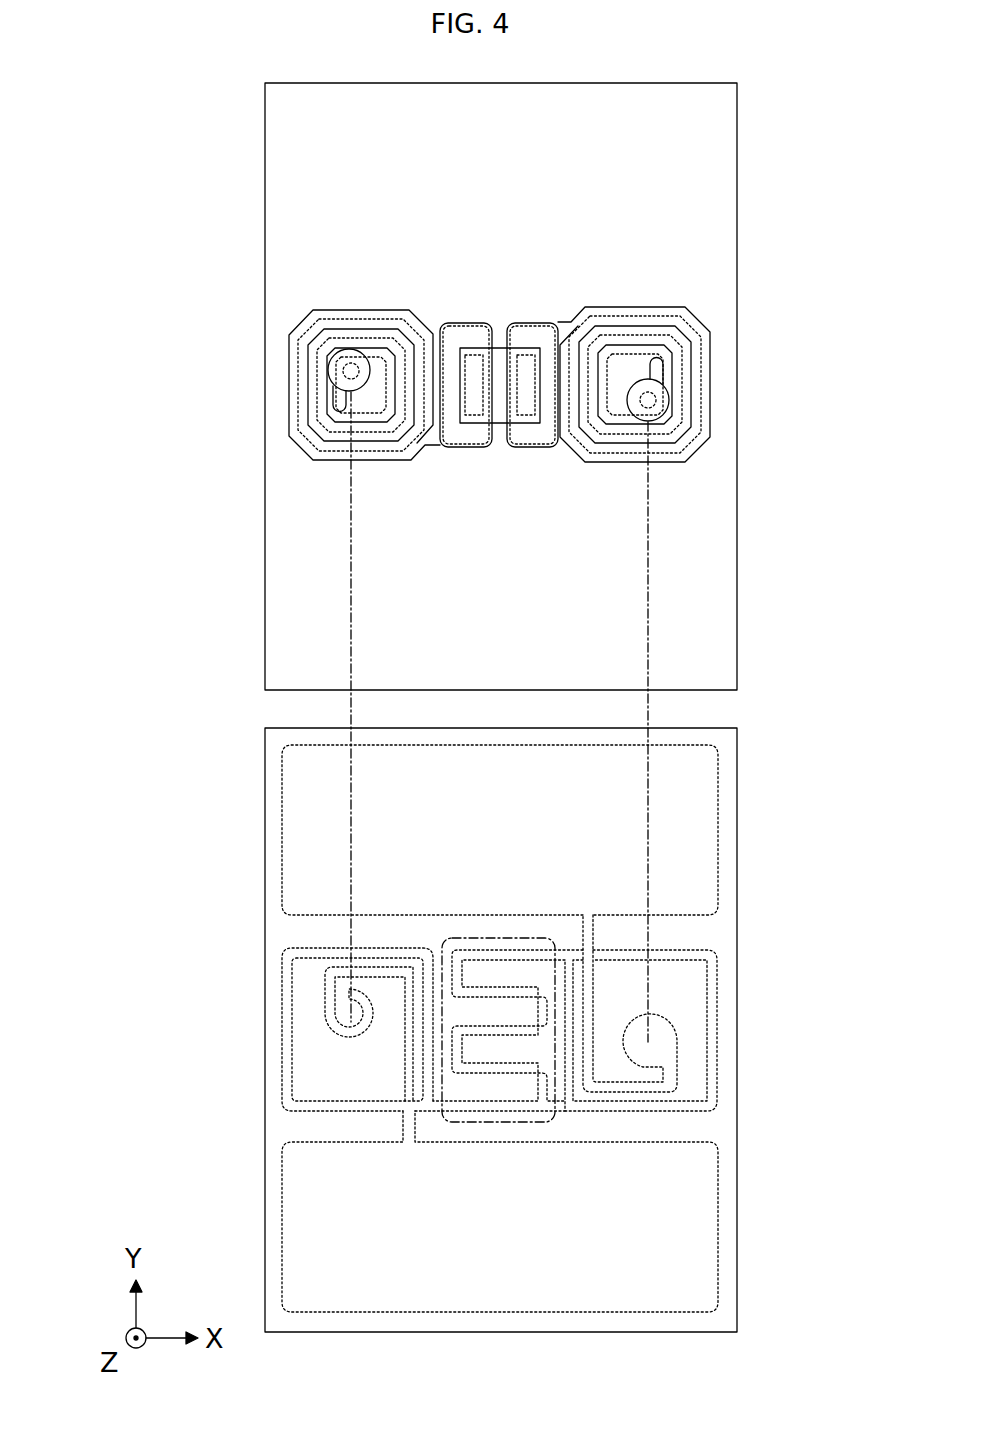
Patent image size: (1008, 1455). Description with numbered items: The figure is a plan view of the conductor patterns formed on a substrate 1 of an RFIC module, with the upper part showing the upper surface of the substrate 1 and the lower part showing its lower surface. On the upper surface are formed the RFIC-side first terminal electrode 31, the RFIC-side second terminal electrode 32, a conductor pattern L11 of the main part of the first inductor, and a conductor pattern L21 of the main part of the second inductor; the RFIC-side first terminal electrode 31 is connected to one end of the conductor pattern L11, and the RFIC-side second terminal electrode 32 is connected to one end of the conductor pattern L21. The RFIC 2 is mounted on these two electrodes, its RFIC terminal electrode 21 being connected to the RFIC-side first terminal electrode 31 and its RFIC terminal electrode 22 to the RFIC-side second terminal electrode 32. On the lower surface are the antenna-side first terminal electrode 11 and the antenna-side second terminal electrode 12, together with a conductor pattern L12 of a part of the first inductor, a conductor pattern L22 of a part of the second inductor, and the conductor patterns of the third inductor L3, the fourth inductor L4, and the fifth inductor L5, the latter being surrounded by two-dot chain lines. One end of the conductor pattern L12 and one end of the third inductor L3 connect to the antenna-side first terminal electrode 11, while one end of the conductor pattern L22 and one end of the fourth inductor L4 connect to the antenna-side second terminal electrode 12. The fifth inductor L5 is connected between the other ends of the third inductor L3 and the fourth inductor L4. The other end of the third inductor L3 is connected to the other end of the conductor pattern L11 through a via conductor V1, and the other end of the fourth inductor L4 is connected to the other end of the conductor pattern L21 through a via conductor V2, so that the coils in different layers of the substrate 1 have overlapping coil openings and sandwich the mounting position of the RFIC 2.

The substrate 1 is at (718, 146).
The RFIC 2 is at (500, 352).
The RFIC terminal electrode 21 is at (527, 365).
The RFIC terminal electrode 22 is at (477, 415).
The RFIC-side first terminal electrode 31 is at (545, 440).
The RFIC-side second terminal electrode 32 is at (456, 330).
The antenna-side first terminal electrode 11 is at (305, 845).
The antenna-side second terminal electrode 12 is at (700, 1228).
The conductor pattern of the main part of the first inductor L11 is at (712, 387).
The conductor pattern of the main part of the second inductor L21 is at (289, 383).
The conductor pattern of a part of the first inductor L12 is at (595, 1005).
The conductor pattern of a part of the second inductor L22 is at (405, 1048).
The third inductor L3 is at (718, 1035).
The fourth inductor L4 is at (290, 1022).
The fifth inductor L5 is at (562, 1125).
The via conductor V1 is at (652, 400).
The via conductor V2 is at (341, 370).